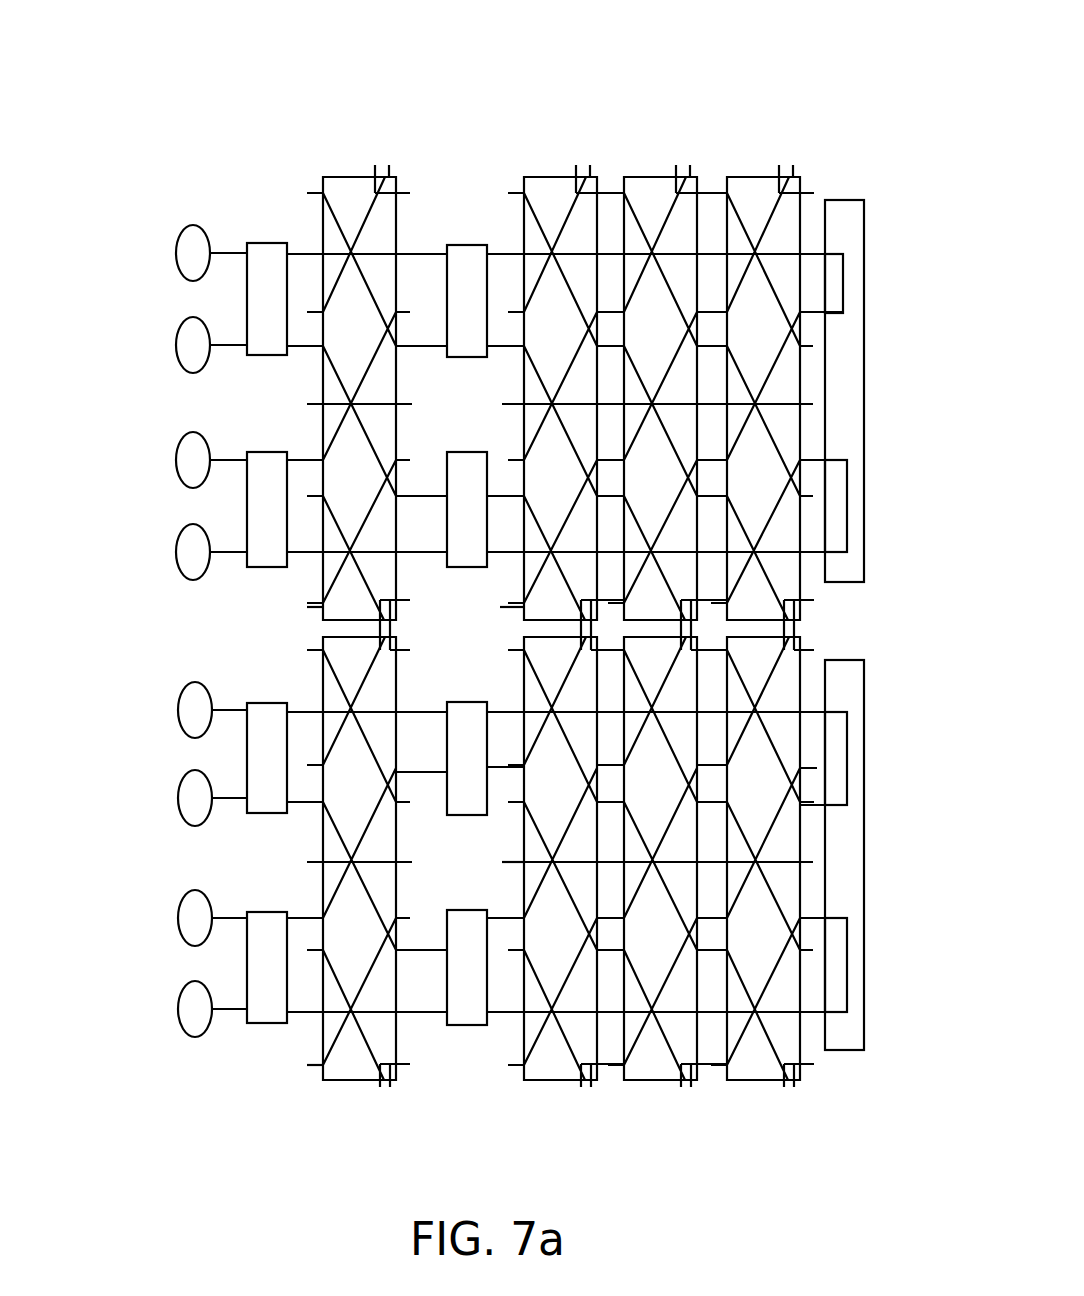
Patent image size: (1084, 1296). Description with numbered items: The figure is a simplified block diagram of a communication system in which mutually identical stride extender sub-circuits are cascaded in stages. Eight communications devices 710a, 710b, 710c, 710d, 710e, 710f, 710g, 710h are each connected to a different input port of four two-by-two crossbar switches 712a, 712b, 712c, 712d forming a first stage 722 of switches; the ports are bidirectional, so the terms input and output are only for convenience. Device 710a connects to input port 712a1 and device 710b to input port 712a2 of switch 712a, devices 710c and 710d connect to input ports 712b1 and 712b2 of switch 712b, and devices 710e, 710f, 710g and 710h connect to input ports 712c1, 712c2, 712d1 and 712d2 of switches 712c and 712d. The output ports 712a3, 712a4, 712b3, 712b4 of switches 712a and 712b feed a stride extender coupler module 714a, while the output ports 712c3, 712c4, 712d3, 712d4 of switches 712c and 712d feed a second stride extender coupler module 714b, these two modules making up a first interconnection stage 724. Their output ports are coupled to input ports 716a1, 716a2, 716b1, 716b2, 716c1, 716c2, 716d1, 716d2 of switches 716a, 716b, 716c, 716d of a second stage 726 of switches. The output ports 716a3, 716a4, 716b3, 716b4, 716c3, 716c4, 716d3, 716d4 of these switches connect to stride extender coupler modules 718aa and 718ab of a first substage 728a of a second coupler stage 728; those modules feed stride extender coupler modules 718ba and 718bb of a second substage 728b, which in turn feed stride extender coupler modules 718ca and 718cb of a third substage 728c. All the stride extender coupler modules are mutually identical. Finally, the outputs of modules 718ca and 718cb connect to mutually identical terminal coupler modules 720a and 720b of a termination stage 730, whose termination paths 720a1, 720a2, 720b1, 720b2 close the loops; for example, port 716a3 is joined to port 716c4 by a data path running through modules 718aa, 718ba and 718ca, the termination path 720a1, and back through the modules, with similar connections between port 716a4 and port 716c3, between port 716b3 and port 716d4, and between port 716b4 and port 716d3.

The communications device 710a is at (177, 240).
The communications device 710b is at (177, 340).
The communications device 710c is at (177, 460).
The communications device 710d is at (177, 552).
The communications device 710e is at (180, 710).
The communications device 710f is at (178, 798).
The communications device 710g is at (178, 918).
The communications device 710h is at (178, 1009).
The crossbar switch 712a is at (262, 243).
The crossbar switch 712b is at (247, 570).
The crossbar switch 712c is at (255, 703).
The crossbar switch 712d is at (250, 1027).
The input port 712a1 is at (247, 262).
The input port 712a2 is at (247, 350).
The output port 712a3 is at (293, 243).
The output port 712a4 is at (293, 352).
The input port 712b1 is at (255, 452).
The input port 712b2 is at (247, 545).
The output port 712b3 is at (307, 404).
The output port 712b4 is at (307, 607).
The input port 712c1 is at (247, 700).
The input port 712c2 is at (247, 815).
The output port 712c3 is at (300, 678).
The output port 712c4 is at (292, 815).
The input port 712d1 is at (247, 910).
The input port 712d2 is at (247, 990).
The output port 712d3 is at (300, 880).
The output port 712d4 is at (290, 1025).
The stride extender coupler module 714a is at (348, 177).
The stride extender coupler module 714b is at (352, 1080).
The switch 716a is at (462, 245).
The switch 716b is at (463, 538).
The switch 716c is at (456, 766).
The switch 716d is at (487, 1028).
The input port 716a1 is at (447, 262).
The input port 716a2 is at (447, 350).
The output port 716a3 is at (490, 250).
The output port 716a4 is at (482, 383).
The input port 716b1 is at (447, 460).
The input port 716b2 is at (447, 567).
The output port 716b3 is at (490, 452).
The output port 716b4 is at (482, 610).
The input port 716c1 is at (452, 712).
The input port 716c2 is at (447, 812).
The output port 716c3 is at (470, 702).
The output port 716c4 is at (481, 853).
The input port 716d1 is at (452, 910).
The input port 716d2 is at (447, 1027).
The output port 716d3 is at (495, 885).
The output port 716d4 is at (500, 1014).
The stride extender coupler module 718aa is at (553, 177).
The stride extender coupler module 718ab is at (560, 1083).
The stride extender coupler module 718ba is at (657, 177).
The stride extender coupler module 718bb is at (663, 1083).
The stride extender coupler module 718ca is at (750, 177).
The stride extender coupler module 718cb is at (770, 1083).
The terminal coupler module 720a is at (864, 370).
The termination path 720a1 is at (843, 283).
The termination path 720a2 is at (847, 505).
The terminal coupler module 720b is at (864, 835).
The termination path 720b1 is at (847, 725).
The termination path 720b2 is at (847, 960).
The first stage of switches 722 is at (250, 120).
The first interconnection stage 724 is at (371, 115).
The second stage of switches 726 is at (473, 113).
The second coupler stage 728 is at (818, 58).
The first substage 728a is at (590, 112).
The second substage 728b is at (698, 115).
The third substage 728c is at (813, 93).
The termination stage 730 is at (859, 118).